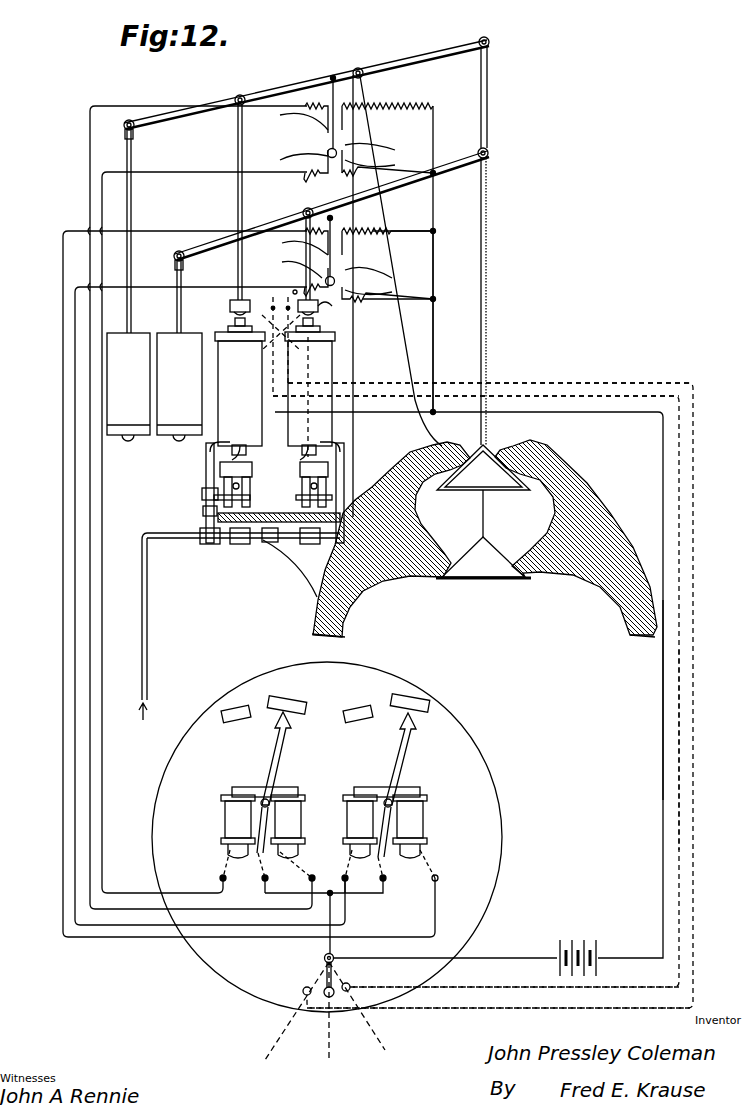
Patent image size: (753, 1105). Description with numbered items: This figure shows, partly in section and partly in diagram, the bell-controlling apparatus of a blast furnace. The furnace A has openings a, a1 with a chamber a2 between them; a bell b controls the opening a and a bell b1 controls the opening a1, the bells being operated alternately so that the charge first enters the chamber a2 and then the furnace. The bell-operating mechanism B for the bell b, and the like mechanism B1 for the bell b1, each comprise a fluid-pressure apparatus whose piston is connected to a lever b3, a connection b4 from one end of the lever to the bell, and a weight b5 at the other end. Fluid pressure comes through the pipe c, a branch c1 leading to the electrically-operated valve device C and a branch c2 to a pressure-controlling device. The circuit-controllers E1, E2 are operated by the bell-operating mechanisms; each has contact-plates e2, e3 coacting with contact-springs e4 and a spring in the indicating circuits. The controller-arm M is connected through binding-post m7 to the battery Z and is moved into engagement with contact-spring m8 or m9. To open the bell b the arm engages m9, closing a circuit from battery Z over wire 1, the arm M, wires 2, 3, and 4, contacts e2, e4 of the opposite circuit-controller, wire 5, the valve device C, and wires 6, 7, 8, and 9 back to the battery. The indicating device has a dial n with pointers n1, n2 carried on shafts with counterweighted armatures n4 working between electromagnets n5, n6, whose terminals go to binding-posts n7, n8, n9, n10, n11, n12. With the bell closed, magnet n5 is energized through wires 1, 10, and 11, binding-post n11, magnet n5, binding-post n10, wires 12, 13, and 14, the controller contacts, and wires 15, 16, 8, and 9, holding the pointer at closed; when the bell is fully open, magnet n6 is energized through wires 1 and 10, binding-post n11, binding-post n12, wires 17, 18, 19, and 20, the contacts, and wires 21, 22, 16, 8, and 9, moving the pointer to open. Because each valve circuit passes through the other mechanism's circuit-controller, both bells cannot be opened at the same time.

The furnace A is at (590, 578).
The furnace opening a is at (470, 465).
The furnace opening a1 is at (430, 577).
The chamber a2 is at (452, 513).
The bell b is at (503, 494).
The bell b1 is at (494, 580).
The lever b3 is at (428, 52).
The connection b4 is at (488, 118).
The weight b5 is at (128, 387).
The bell-operating mechanism B is at (310, 382).
The bell-operating mechanism B1 is at (258, 348).
The electrically-operated valve device C is at (222, 462).
The pipe c is at (206, 505).
The branch c1 is at (250, 500).
The branch c2 is at (208, 446).
The circuit-controller E1 is at (350, 142).
The circuit-controller E2 is at (343, 265).
The contact-plate e2 is at (262, 312).
The contact-plate e3 is at (290, 290).
The contact-spring e4 is at (250, 312).
The controller-arm M is at (325, 978).
The binding-post m7 is at (336, 956).
The contact-spring m8 is at (303, 990).
The contact-spring m9 is at (350, 985).
The dial n is at (327, 837).
The pointer n1 is at (275, 765).
The pointer n2 is at (400, 785).
The counterweighted armature n4 is at (260, 877).
The electromagnet n5 is at (259, 822).
The electromagnet n6 is at (288, 826).
The binding-post n7 is at (220, 878).
The binding-post n8 is at (268, 879).
The binding-post n9 is at (314, 877).
The binding-post n10 is at (348, 879).
The binding-post n11 is at (386, 879).
The binding-post n12 is at (450, 878).
The battery Z is at (578, 951).
The wire 1 is at (670, 1012).
The wire 2 is at (510, 990).
The wire 3 is at (663, 688).
The wire 4 is at (445, 396).
The wire 5 is at (302, 346).
The wire 6 is at (278, 440).
The wire 7 is at (410, 412).
The wire 8 is at (545, 408).
The wire 9 is at (679, 738).
The wire 10 is at (345, 925).
The wire 11 is at (383, 893).
The wire 12 is at (240, 909).
The wire 13 is at (75, 404).
The wire 14 is at (146, 286).
The wire 15 is at (408, 299).
The wire 16 is at (433, 338).
The wire 17 is at (435, 916).
The wire 18 is at (241, 938).
The wire 19 is at (63, 710).
The wire 20 is at (185, 229).
The wire 21 is at (400, 232).
The wire 22 is at (433, 274).